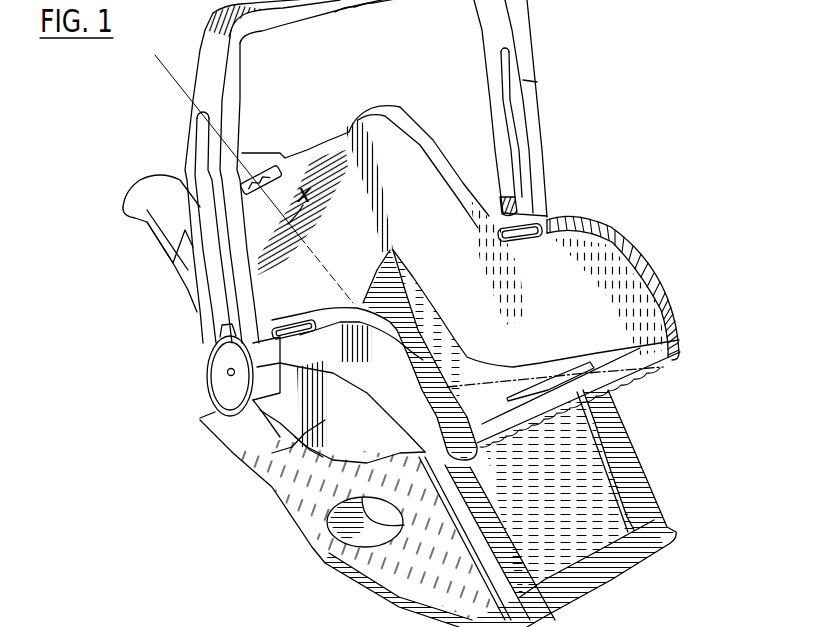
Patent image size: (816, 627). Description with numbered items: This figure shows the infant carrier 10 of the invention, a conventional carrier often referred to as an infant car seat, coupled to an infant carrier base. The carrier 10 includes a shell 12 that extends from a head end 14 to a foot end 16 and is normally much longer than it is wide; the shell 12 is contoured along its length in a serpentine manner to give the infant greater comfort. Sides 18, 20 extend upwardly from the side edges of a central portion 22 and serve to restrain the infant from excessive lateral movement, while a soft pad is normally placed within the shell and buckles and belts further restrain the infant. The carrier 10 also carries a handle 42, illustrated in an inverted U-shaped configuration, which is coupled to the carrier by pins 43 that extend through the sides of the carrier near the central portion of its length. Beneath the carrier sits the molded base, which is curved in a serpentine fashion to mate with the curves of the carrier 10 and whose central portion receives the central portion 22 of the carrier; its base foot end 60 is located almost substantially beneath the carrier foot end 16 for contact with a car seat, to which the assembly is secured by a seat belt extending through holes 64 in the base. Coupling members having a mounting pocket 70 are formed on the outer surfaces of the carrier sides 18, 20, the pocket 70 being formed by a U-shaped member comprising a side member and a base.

The carrier 10 is at (632, 232).
The shell 12 is at (677, 325).
The head end 14 is at (309, 150).
The foot end 16 is at (660, 355).
The side 18 is at (540, 303).
The side 20 is at (367, 427).
The central portion 22 is at (360, 255).
The handle 42 is at (532, 6).
The pins 43 is at (210, 373).
The base foot end 60 is at (615, 580).
The holes 64 is at (334, 536).
The mounting pocket 70 is at (307, 433).